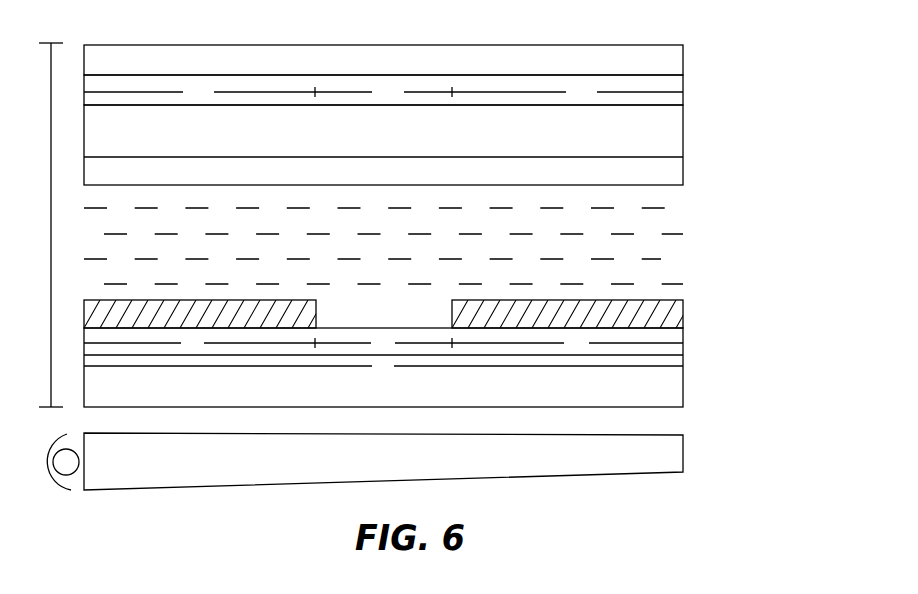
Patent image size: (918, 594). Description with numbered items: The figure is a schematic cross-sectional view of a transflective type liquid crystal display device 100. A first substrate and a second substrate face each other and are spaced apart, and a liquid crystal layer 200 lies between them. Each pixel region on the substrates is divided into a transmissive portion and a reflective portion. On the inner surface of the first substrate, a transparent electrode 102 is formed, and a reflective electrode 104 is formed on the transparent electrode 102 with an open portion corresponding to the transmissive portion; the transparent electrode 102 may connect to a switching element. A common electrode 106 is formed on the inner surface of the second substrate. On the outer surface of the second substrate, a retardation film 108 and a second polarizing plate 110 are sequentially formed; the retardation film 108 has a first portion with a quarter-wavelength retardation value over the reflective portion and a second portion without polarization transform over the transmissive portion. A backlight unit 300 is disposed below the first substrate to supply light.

The transflective type liquid crystal display device 100 is at (46, 225).
The transparent electrode 102 is at (676, 351).
The reflective electrode 104 is at (676, 316).
The common electrode 106 is at (674, 175).
The retardation film 108 is at (679, 84).
The second polarizing plate 110 is at (673, 61).
The liquid crystal layer 200 is at (683, 253).
The backlight unit 300 is at (678, 455).